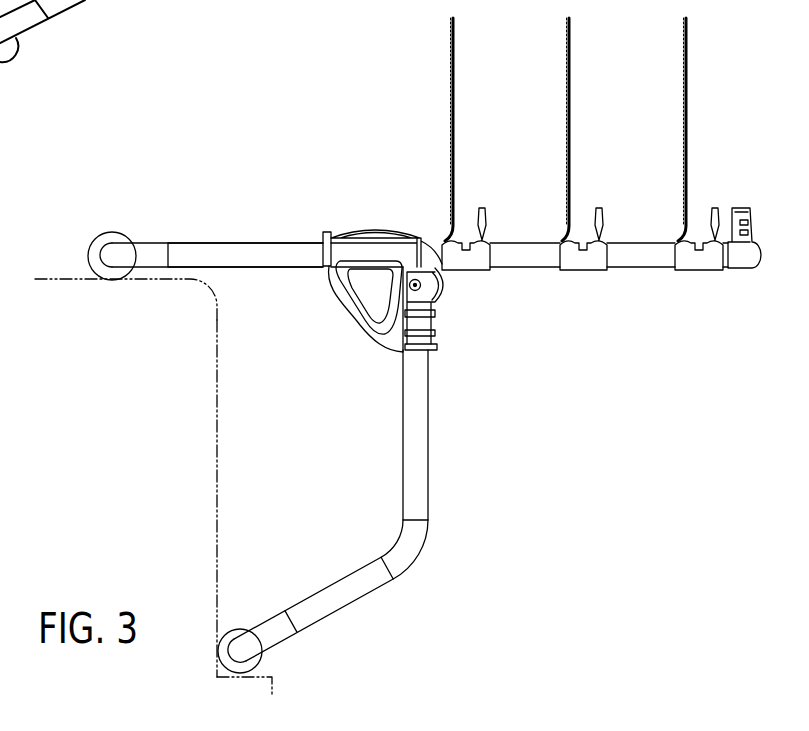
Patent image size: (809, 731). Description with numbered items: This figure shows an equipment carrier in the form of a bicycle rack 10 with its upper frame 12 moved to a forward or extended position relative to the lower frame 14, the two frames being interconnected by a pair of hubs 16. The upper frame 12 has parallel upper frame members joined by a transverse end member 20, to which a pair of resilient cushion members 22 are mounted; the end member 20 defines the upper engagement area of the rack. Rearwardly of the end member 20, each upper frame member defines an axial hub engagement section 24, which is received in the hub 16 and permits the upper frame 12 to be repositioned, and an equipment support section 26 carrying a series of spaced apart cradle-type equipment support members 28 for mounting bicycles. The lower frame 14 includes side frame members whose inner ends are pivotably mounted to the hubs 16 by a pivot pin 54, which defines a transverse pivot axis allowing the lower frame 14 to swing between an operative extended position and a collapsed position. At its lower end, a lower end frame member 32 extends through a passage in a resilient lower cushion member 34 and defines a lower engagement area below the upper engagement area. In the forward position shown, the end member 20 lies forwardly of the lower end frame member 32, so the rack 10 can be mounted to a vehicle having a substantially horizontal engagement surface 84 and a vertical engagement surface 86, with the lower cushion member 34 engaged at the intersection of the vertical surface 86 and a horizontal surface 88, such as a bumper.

The bicycle rack 10 is at (292, 136).
The upper frame 12 is at (249, 226).
The lower frame 14 is at (434, 519).
The hub 16 is at (364, 345).
The transverse end member 20 is at (97, 263).
The resilient cushion member 22 is at (110, 233).
The hub engagement section 24 is at (272, 243).
The equipment support section 26 is at (662, 245).
The cradle-type equipment support member 28 is at (686, 278).
The lower end frame member 32 is at (218, 653).
The lower cushion member 34 is at (238, 630).
The pivot pin 54 is at (422, 285).
The horizontal engagement surface 84 is at (59, 279).
The vertical engagement surface 86 is at (218, 500).
The horizontal surface 88 is at (270, 676).